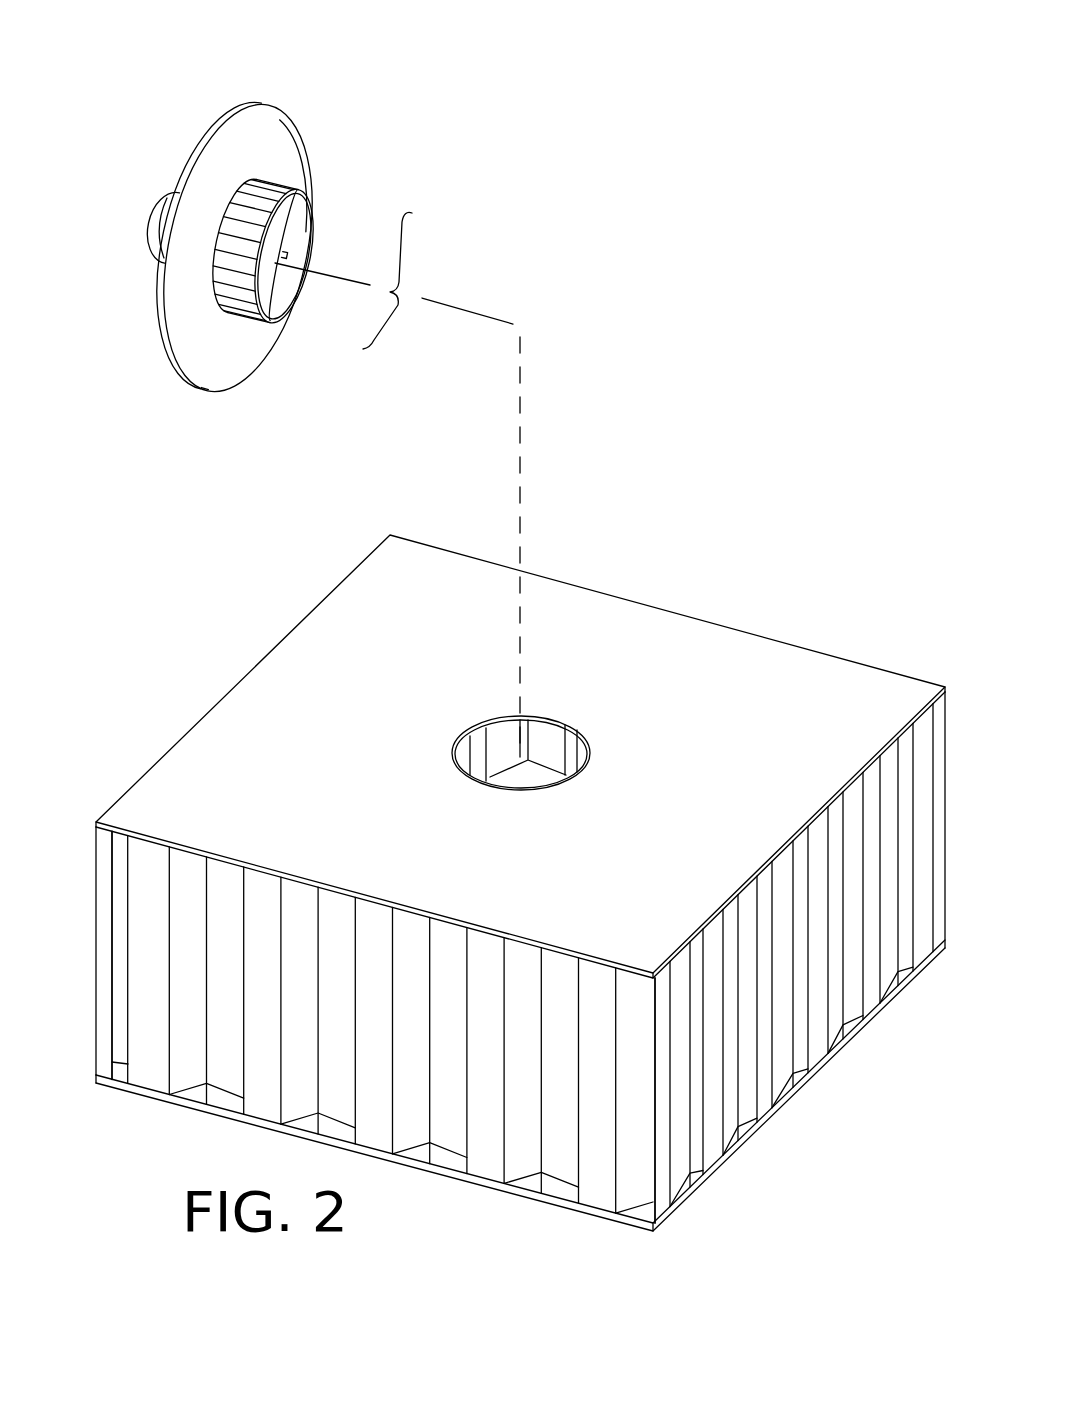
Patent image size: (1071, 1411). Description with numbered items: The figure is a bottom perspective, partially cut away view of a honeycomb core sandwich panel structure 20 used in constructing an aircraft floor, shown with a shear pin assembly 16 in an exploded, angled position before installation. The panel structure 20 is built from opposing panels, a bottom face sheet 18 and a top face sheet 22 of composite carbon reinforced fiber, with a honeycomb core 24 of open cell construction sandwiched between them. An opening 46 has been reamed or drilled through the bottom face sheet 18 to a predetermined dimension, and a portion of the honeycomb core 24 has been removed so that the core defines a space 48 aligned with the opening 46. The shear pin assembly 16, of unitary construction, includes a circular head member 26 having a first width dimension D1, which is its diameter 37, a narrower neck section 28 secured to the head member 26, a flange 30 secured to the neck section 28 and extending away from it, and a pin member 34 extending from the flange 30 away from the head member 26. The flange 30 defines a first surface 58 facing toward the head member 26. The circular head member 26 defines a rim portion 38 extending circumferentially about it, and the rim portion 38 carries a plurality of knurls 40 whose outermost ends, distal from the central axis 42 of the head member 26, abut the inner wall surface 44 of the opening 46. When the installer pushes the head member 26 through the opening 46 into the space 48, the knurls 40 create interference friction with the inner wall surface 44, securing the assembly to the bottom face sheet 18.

The shear pin assembly 16 is at (332, 70).
The bottom face sheet 18 is at (652, 645).
The honeycomb core sandwich panel structure 20 is at (105, 943).
The top face sheet 22 is at (555, 1210).
The honeycomb core 24 is at (370, 1058).
The head member 26 is at (300, 222).
The neck section 28 is at (182, 255).
The flange 30 is at (255, 135).
The pin member 34 is at (166, 215).
The diameter 37 is at (283, 256).
The rim portion 38 is at (284, 255).
The plurality of knurls 40 is at (250, 248).
The central axis 42 is at (480, 312).
The inner wall surface 44 is at (510, 762).
The opening 46 is at (541, 753).
The space 48 is at (487, 733).
The first surface 58 is at (284, 158).
The first width dimension D1 is at (403, 292).